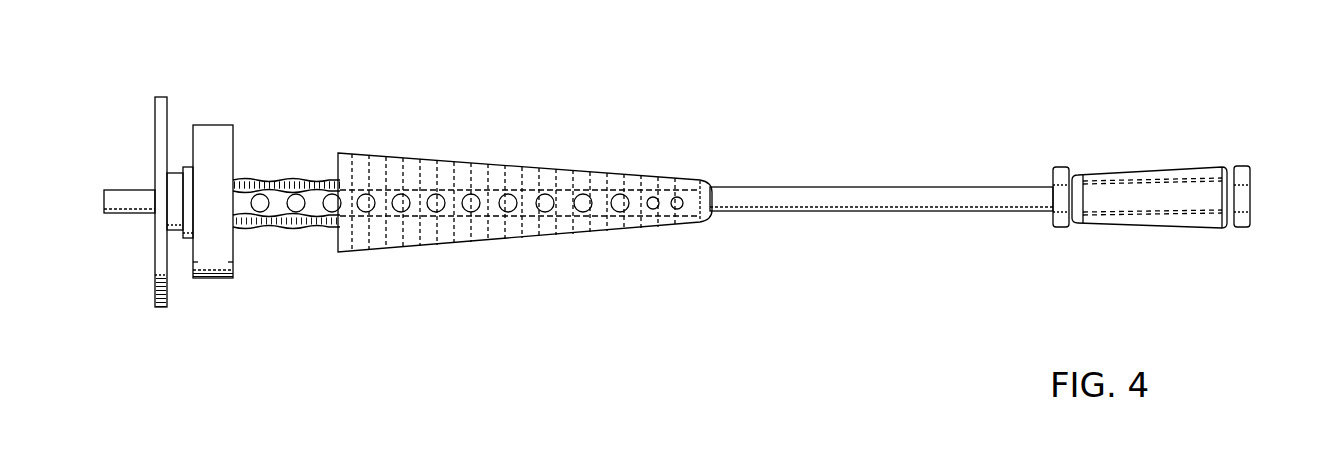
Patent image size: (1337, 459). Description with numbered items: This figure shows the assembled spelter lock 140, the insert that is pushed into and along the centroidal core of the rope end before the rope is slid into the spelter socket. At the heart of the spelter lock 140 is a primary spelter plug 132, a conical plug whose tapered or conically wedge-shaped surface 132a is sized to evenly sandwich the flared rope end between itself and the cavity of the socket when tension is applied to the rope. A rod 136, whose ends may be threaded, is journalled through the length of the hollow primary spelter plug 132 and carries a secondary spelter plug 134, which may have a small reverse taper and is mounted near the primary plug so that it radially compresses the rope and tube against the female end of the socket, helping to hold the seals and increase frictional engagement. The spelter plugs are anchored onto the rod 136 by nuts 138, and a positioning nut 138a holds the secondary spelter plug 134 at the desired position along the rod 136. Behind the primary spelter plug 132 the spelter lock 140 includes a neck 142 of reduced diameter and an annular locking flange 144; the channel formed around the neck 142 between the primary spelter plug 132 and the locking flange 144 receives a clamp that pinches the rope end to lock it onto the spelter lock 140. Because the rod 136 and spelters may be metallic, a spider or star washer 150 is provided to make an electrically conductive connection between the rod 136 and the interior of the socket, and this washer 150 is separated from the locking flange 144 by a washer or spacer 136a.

The spelter lock 140 is at (793, 72).
The spider or star washer 150 is at (172, 117).
The rod 136 is at (127, 187).
The washer or spacer 136a is at (173, 231).
The annular locking flange 144 is at (218, 126).
The neck 142 is at (280, 178).
The primary spelter plug 132 is at (457, 146).
The tapered or conically wedge-shaped surface 132a is at (567, 170).
The secondary spelter plug 134 is at (1170, 148).
The positioning nut 138a is at (1059, 228).
The nut 138 is at (1241, 228).